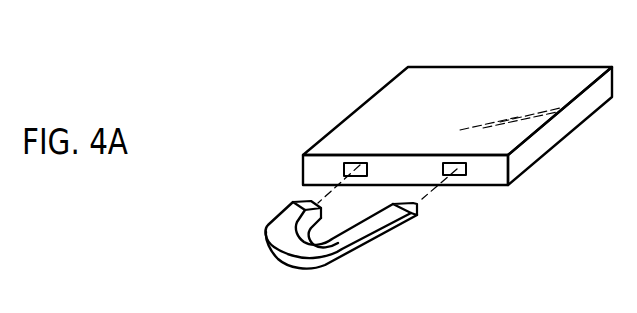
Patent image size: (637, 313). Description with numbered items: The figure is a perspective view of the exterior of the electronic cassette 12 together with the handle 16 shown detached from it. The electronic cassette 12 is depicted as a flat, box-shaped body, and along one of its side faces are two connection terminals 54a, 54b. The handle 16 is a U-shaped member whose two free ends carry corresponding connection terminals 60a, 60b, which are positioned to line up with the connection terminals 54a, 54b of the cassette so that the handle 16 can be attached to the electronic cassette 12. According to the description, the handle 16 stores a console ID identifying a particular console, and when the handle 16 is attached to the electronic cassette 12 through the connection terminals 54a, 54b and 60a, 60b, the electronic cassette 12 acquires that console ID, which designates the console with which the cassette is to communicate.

The electronic cassette 12 is at (508, 88).
The connection terminal 54a is at (352, 161).
The connection terminal 54b is at (462, 177).
The handle 16 is at (288, 247).
The connection terminal 60a is at (296, 203).
The connection terminal 60b is at (418, 218).